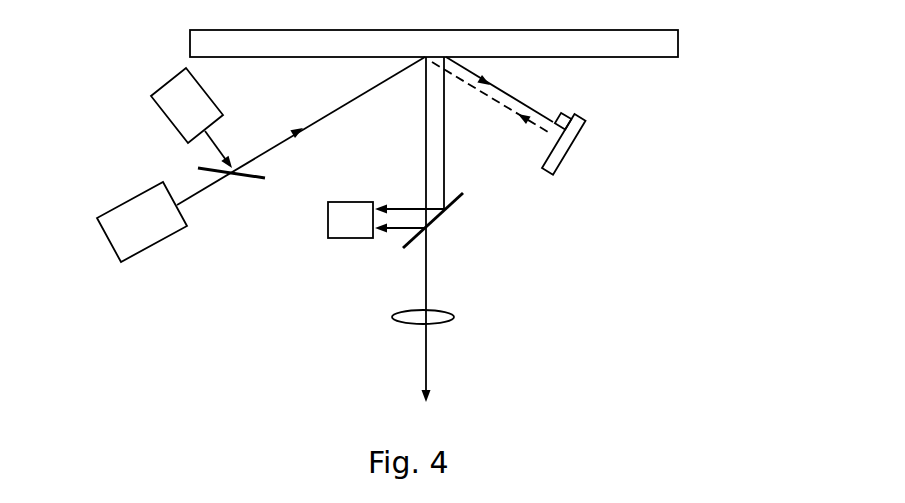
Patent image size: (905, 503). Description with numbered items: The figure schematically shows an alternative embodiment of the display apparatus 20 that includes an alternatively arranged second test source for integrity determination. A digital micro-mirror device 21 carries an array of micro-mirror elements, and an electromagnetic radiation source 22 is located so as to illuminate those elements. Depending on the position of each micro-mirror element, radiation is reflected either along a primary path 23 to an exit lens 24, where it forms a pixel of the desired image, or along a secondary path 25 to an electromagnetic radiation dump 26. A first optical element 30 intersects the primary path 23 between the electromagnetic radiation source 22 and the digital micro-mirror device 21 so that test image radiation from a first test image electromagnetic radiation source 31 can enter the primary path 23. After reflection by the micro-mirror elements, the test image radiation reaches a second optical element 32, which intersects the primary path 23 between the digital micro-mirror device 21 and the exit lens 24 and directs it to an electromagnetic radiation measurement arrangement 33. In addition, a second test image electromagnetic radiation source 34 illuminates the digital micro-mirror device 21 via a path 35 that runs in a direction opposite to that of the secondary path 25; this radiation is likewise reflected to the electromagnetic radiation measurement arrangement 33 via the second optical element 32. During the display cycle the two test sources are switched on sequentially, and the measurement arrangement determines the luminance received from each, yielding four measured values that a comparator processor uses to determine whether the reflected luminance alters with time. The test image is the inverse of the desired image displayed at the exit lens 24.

The display apparatus 20 is at (788, 147).
The digital micro-mirror device 21 is at (655, 43).
The electromagnetic radiation source 22 is at (128, 230).
The primary path 23 is at (426, 357).
The exit lens 24 is at (453, 318).
The secondary path 25 is at (523, 121).
The electromagnetic radiation dump 26 is at (558, 155).
The optical element 30 is at (252, 178).
The test image electromagnetic radiation source 31 is at (172, 101).
The second optical element 32 is at (461, 203).
The electromagnetic radiation measurement arrangement 33 is at (353, 212).
The second test image electromagnetic radiation source 34 is at (563, 112).
The path 35 is at (487, 79).